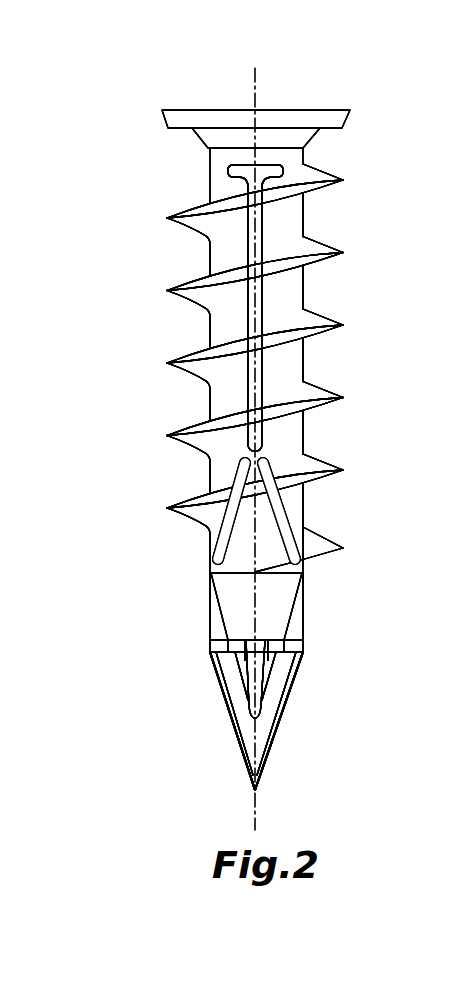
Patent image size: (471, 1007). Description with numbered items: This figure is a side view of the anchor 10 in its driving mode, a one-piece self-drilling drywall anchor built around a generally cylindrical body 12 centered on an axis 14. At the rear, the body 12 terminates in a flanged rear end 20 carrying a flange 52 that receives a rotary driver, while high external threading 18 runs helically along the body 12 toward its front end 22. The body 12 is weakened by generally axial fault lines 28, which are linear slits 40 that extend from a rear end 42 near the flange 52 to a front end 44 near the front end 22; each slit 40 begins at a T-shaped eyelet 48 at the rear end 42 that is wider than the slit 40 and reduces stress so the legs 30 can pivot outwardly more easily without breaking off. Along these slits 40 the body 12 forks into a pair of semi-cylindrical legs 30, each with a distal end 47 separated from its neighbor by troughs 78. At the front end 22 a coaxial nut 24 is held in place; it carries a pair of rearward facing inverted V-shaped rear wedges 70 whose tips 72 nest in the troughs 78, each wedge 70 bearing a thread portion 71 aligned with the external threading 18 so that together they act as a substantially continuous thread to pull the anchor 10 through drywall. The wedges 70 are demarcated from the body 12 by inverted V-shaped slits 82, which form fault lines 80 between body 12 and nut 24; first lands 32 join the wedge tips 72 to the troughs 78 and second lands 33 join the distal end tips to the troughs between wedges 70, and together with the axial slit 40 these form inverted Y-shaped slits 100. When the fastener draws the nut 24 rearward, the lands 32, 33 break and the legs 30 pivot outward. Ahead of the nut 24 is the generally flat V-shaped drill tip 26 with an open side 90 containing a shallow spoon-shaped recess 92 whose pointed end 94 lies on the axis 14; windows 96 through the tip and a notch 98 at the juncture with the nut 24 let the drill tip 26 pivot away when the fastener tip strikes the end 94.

The anchor 10 is at (368, 182).
The body 12 is at (349, 330).
The axis 14 is at (253, 85).
The external threading 18 is at (323, 247).
The flanged rear end 20 is at (152, 107).
The front end 22 is at (198, 542).
The nut 24 is at (293, 600).
The drill tip 26 is at (262, 730).
The axial fault lines 28 is at (232, 315).
The legs 30 is at (297, 370).
The first lands 32 is at (270, 442).
The second lands 33 is at (208, 577).
The slits 40 is at (262, 302).
The rear end of slit 42 is at (237, 188).
The front end of slit 44 is at (232, 450).
The distal end 47 is at (313, 535).
The T-shaped eyelet 48 is at (267, 167).
The flange 52 is at (320, 108).
The rear wedges 70 is at (253, 542).
The thread portion 71 is at (272, 488).
The tip of rear wedge 72 is at (238, 478).
The troughs 78 is at (210, 441).
The fault lines 80 is at (310, 548).
The inverted V-shaped slits 82 is at (310, 518).
The open side 90 is at (266, 692).
The recess 92 is at (253, 684).
The pointed end 94 is at (255, 718).
The windows 96 is at (281, 690).
The notch 98 is at (285, 658).
The inverted Y-shaped slits 100 is at (303, 422).